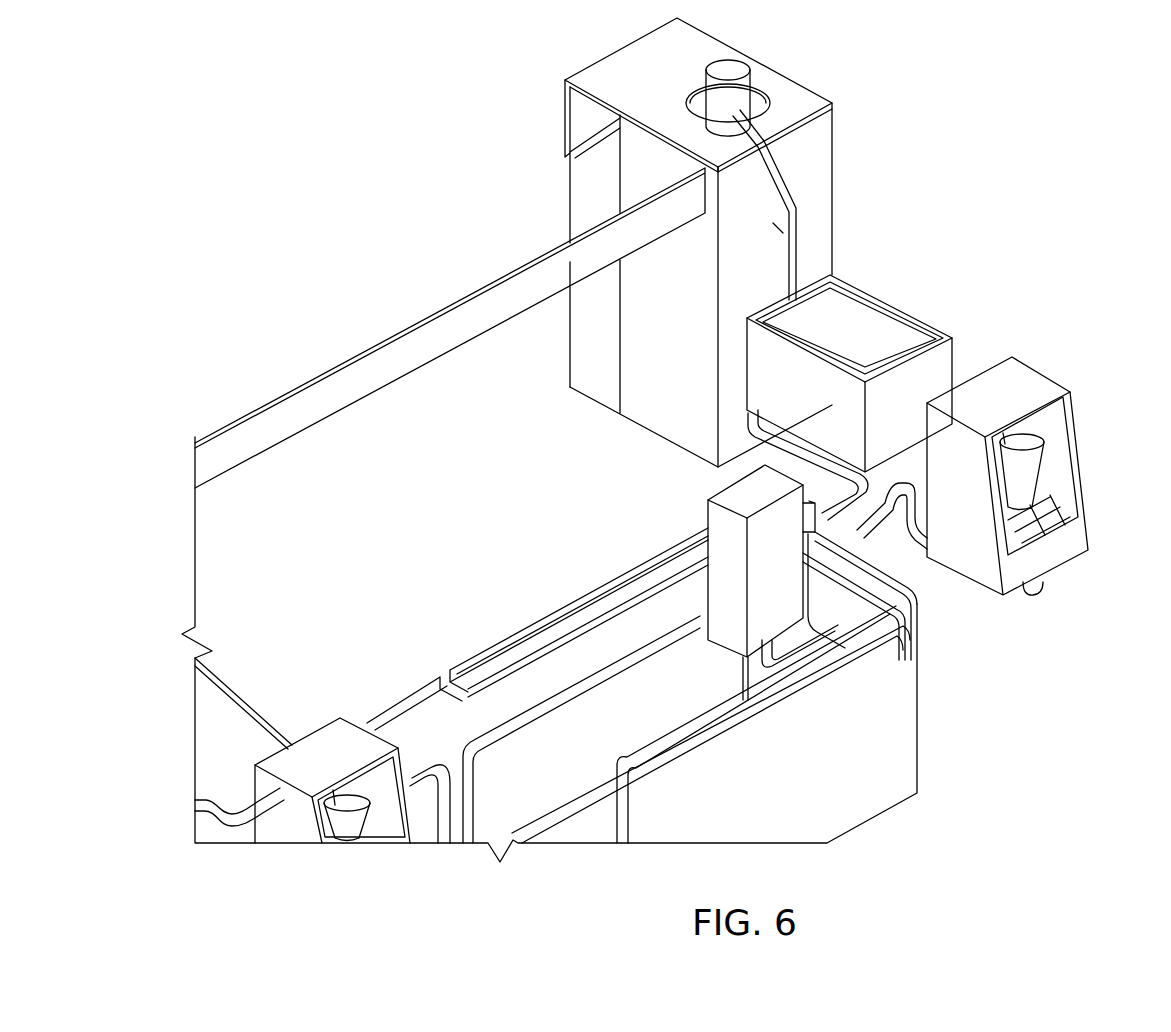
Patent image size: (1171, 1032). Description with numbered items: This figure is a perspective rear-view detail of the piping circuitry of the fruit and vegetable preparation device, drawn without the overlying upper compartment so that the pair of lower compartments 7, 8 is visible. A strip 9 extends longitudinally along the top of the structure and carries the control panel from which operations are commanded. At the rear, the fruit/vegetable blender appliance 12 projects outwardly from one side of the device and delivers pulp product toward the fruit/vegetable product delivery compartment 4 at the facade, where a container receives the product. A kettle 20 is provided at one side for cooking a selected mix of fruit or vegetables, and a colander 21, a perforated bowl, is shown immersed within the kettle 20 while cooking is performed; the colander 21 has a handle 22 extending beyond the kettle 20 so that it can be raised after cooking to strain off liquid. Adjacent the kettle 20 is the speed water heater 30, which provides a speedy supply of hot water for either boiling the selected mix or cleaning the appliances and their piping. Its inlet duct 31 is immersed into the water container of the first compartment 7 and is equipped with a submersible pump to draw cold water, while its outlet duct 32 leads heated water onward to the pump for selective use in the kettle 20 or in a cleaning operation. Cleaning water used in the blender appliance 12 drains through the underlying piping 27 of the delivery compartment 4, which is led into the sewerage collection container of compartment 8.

The fruit/vegetable product delivery compartment 4 is at (1078, 427).
The first compartment 7 is at (917, 777).
The compartment 8 is at (393, 697).
The strip 9 is at (403, 357).
The fruit/vegetable blender appliance 12 is at (785, 90).
The kettle 20 is at (952, 357).
The colander 21 is at (853, 300).
The handle 22 is at (780, 203).
The piping 27 is at (637, 658).
The speed water heater 30 is at (710, 507).
The inlet duct 31 is at (745, 677).
The outlet duct 32 is at (810, 650).